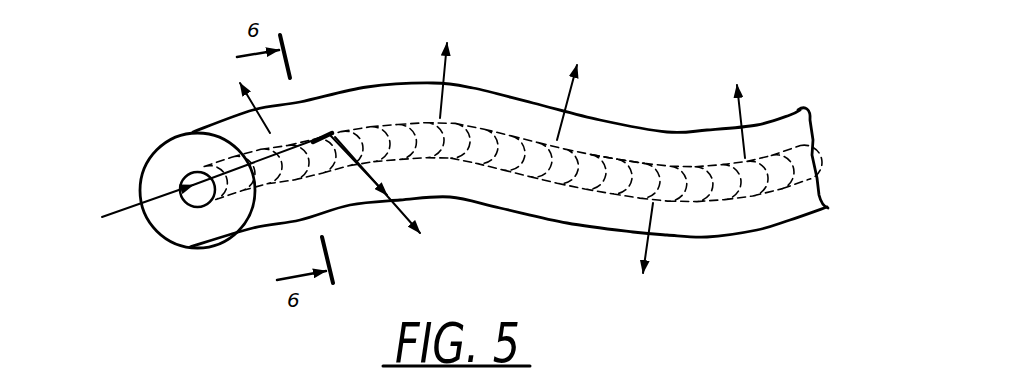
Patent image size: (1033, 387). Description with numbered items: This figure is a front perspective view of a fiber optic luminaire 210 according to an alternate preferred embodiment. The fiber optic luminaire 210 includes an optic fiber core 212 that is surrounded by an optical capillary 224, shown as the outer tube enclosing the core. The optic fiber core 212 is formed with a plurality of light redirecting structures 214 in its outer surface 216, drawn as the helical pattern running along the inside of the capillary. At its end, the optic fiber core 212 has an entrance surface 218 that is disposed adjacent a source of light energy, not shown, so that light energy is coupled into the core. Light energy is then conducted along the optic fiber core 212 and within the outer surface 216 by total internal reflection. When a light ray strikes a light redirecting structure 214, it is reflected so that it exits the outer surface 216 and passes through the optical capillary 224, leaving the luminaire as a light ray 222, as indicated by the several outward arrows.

The fiber optic luminaire 210 is at (253, 257).
The optic fiber core 212 is at (198, 207).
The light redirecting structures 214 is at (625, 168).
The outer surface 216 is at (480, 130).
The entrance surface 218 is at (180, 180).
The light ray 222 is at (247, 107).
The optical capillary 224 is at (170, 227).